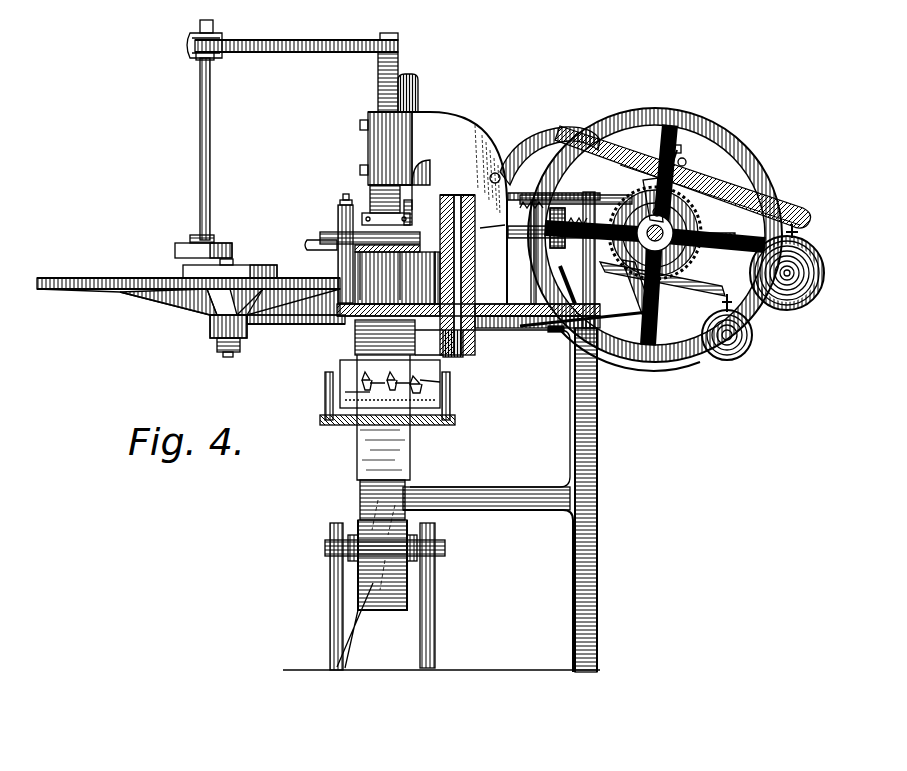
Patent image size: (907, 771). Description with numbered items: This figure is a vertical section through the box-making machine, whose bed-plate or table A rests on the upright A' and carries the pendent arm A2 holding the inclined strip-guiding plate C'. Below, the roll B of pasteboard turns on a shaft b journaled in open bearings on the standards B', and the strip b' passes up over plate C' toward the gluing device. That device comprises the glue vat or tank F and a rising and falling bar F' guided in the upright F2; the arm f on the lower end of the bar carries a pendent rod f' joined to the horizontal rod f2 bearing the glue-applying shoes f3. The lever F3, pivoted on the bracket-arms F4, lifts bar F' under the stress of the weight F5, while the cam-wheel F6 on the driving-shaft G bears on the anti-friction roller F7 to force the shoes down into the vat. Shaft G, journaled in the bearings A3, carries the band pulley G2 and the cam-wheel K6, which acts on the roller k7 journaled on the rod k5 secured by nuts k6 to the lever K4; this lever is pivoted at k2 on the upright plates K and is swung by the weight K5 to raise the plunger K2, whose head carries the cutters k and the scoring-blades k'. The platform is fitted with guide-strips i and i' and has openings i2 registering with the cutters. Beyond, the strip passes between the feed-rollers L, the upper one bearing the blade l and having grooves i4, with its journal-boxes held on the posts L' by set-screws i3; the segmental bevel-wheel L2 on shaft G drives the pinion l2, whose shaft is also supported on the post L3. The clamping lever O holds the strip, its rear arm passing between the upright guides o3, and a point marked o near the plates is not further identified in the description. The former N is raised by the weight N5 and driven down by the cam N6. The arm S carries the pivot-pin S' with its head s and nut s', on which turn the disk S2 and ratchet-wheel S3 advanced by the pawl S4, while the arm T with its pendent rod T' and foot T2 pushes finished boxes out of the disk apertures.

The arm T is at (292, 39).
The pendent rod T' is at (211, 146).
The foot T2 is at (186, 246).
The reciprocating plunger K2 is at (378, 88).
The upright parallel plates K is at (433, 208).
The pivot pin o is at (495, 178).
The upright F2 is at (457, 262).
The bed-plate or table A is at (468, 330).
The upright guides o3 is at (558, 340).
The uprights A' is at (448, 500).
The inclined strip-guiding plate C' is at (385, 400).
The pendent arm A2 is at (455, 340).
The glue vat or tank F is at (377, 386).
The glue-applying shoes f3 is at (382, 375).
The horizontally-extending arm f is at (437, 383).
The pendent rod f' is at (441, 391).
The horizontal rod f2 is at (345, 394).
The strip b' is at (392, 489).
The roll B is at (372, 584).
The shaft b is at (395, 547).
The standards B' is at (377, 596).
The horizontal rotating disk S2 is at (130, 306).
The upright pivot-pin S' is at (228, 343).
The nut s' is at (212, 347).
The arm S is at (296, 332).
The ratchet-wheel S3 is at (250, 268).
The head s is at (232, 256).
The pawl S4 is at (318, 240).
The posts L' is at (332, 251).
The set-screws i3 is at (343, 198).
The former N is at (375, 197).
The scoring-blades k' is at (377, 203).
The circumferential grooves i4 is at (412, 215).
The guide-strips i' is at (378, 234).
The guide-strips i is at (394, 247).
The feed-rollers L is at (395, 278).
The cutters k is at (364, 276).
The longitudinal blade l is at (402, 276).
The rising and falling bar F' is at (422, 278).
The lever F3 is at (512, 236).
The clamping lever O is at (538, 213).
The openings i2 is at (491, 220).
The post L3 is at (540, 282).
The pinion l2 is at (578, 270).
The band pulley or wheel G2 is at (785, 142).
The bracket-arms F4 is at (606, 350).
The driving-shaft G is at (680, 230).
The roller k7 is at (650, 208).
The cam-wheel K6 is at (712, 252).
The cam-wheel F6 is at (622, 196).
The lever K4 is at (585, 135).
The pivot k2 is at (525, 165).
The bevel-wheel L2 is at (765, 178).
The rod k5 is at (690, 140).
The nuts k6 is at (686, 163).
The weight K5 is at (825, 262).
The weight N5 is at (769, 225).
The bearings A3 is at (622, 294).
The anti-friction-roller F7 is at (630, 275).
The cam N6 is at (750, 314).
The weight F5 is at (752, 342).